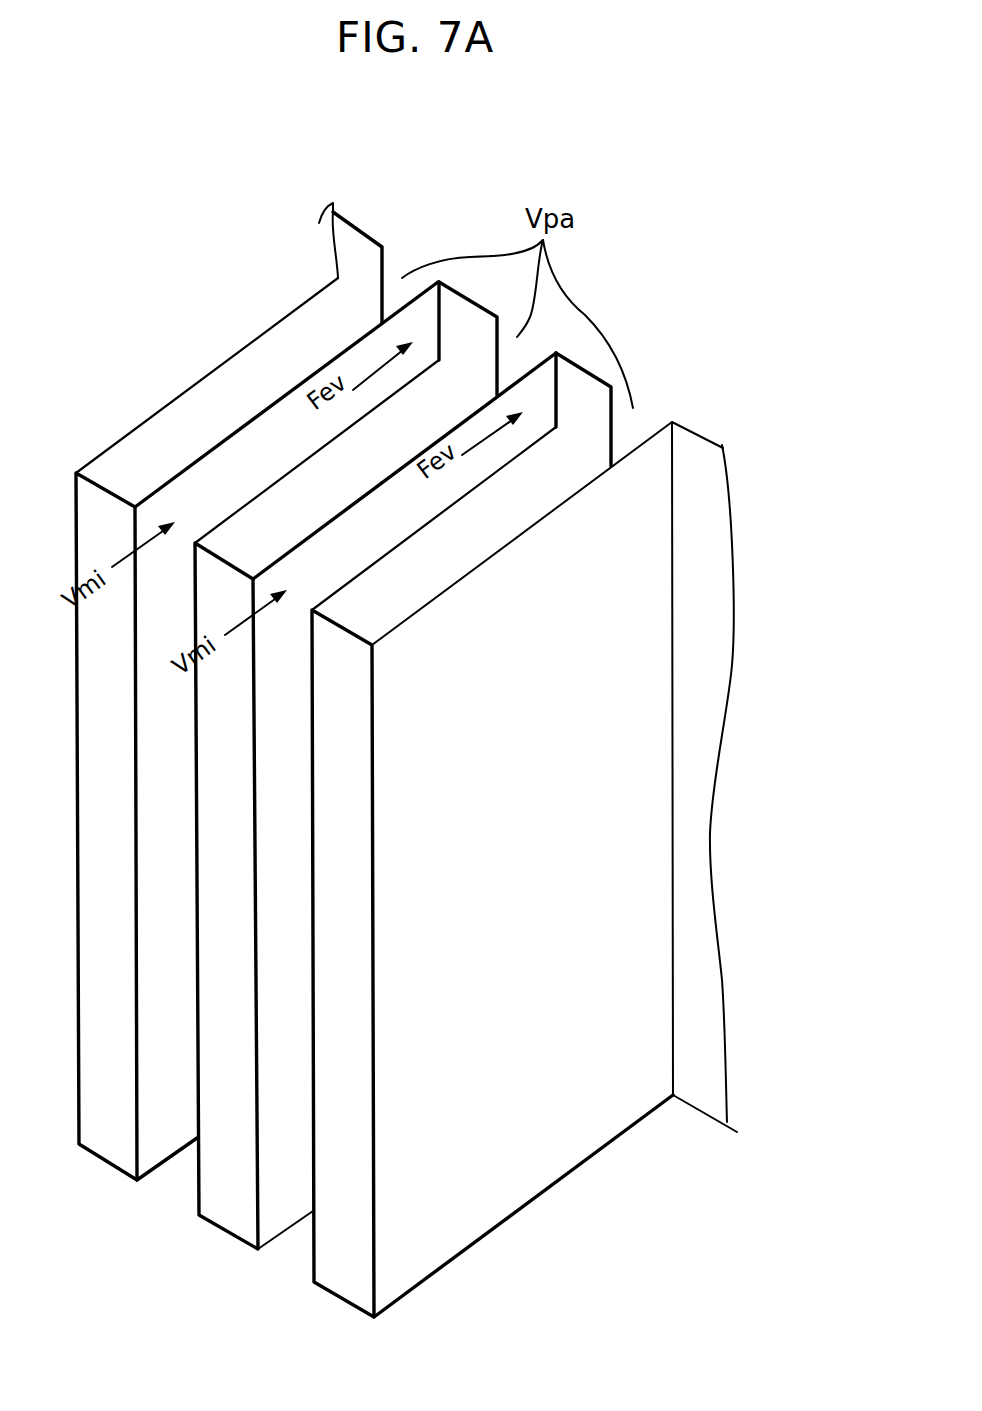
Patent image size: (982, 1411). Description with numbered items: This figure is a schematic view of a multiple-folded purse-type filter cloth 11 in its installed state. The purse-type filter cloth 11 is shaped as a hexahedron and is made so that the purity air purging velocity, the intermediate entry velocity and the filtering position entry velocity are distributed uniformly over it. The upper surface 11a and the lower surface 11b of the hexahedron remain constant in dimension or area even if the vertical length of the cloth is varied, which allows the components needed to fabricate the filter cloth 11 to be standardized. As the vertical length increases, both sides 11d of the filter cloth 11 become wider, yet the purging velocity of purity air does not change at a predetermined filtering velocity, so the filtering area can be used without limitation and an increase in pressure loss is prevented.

The purse-type filter cloth 11 is at (457, 760).
The upper surface 11a is at (525, 495).
The lower surface 11b is at (593, 1157).
The both sides 11d is at (625, 943).